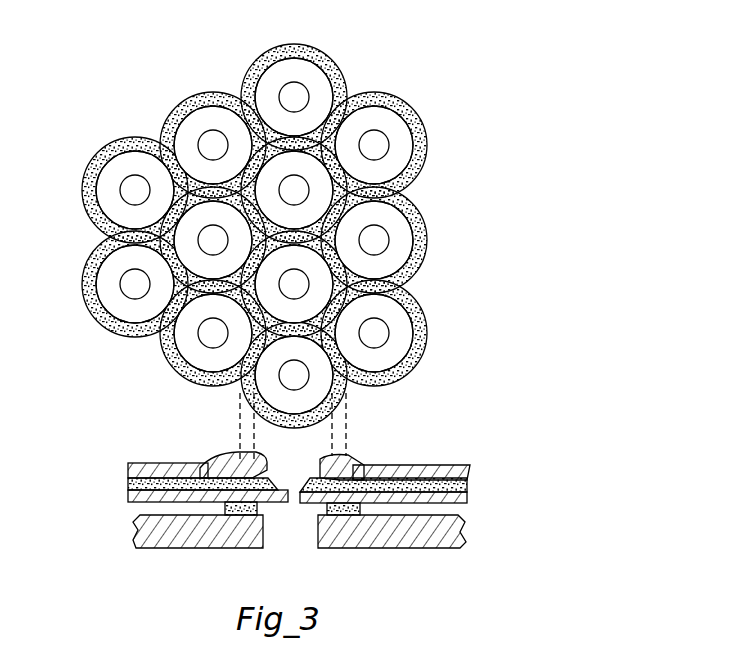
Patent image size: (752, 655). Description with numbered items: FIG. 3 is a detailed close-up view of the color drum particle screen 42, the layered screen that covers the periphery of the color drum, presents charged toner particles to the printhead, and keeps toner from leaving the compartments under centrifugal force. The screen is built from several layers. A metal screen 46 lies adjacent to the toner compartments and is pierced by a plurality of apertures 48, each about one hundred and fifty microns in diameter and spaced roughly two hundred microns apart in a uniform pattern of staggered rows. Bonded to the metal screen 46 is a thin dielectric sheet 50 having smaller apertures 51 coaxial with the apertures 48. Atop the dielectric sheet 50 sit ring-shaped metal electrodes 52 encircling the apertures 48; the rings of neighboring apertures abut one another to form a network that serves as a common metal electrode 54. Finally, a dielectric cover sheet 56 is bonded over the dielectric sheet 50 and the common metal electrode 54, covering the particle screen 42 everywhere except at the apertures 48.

The color drum particle screen 42 is at (496, 483).
The metal screen 46 is at (426, 542).
The apertures 48 is at (275, 73).
The thin dielectric sheet 50 is at (128, 495).
The apertures 51 is at (304, 90).
The ring-shaped metal electrodes 52 is at (318, 50).
The common metal electrode 54 is at (420, 212).
The dielectric cover sheet 56 is at (166, 463).